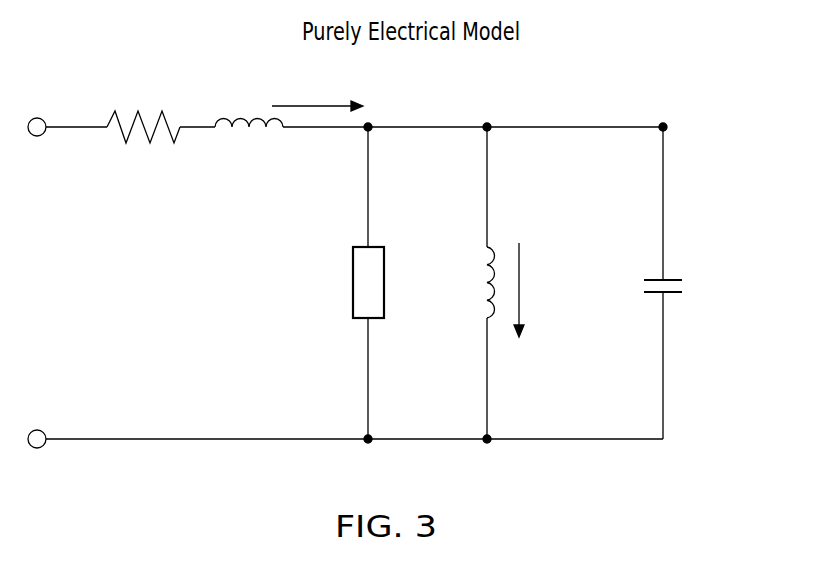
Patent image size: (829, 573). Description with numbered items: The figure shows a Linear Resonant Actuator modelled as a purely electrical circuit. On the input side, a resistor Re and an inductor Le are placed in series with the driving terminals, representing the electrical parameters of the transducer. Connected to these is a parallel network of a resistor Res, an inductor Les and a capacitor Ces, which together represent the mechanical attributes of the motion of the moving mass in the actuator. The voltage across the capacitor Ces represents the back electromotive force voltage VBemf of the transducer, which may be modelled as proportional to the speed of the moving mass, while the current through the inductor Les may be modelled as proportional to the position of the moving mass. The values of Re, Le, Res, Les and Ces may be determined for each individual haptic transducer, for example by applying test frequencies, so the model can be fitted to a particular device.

The resistor Re is at (143, 113).
The inductor Le is at (249, 106).
The resistor Res is at (345, 283).
The inductor Les is at (469, 283).
The capacitor Ces is at (638, 287).
The back-EMF voltage VBemf is at (727, 278).